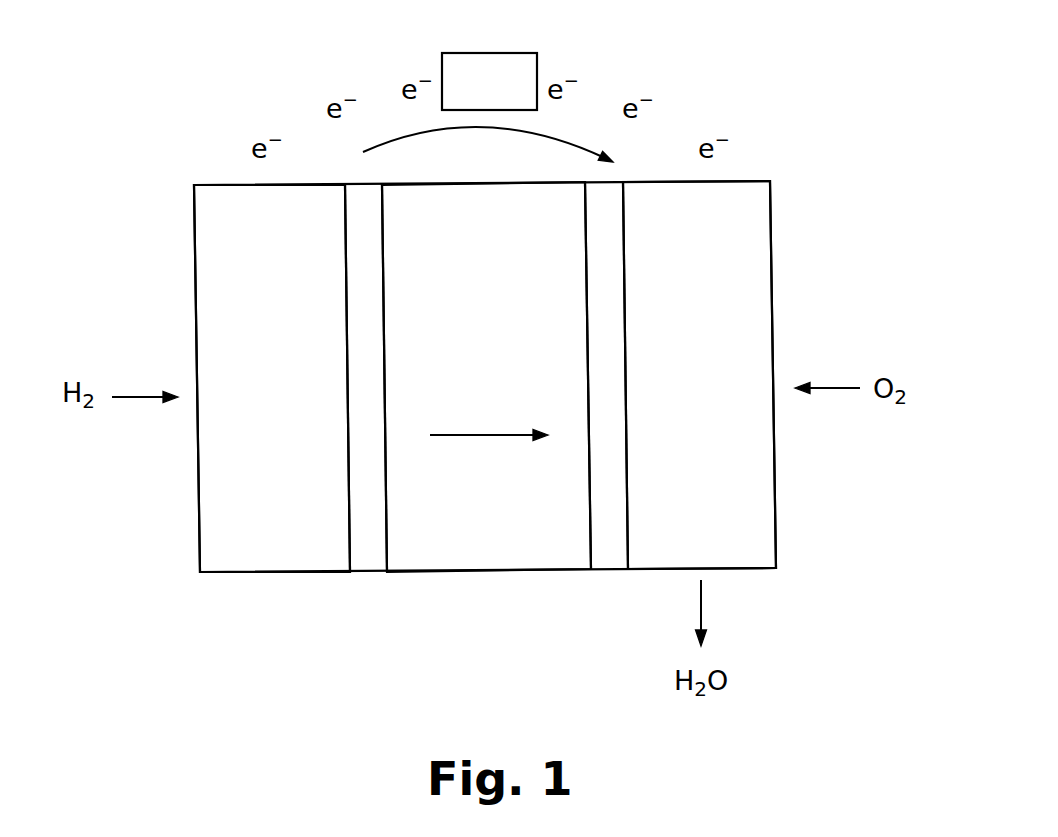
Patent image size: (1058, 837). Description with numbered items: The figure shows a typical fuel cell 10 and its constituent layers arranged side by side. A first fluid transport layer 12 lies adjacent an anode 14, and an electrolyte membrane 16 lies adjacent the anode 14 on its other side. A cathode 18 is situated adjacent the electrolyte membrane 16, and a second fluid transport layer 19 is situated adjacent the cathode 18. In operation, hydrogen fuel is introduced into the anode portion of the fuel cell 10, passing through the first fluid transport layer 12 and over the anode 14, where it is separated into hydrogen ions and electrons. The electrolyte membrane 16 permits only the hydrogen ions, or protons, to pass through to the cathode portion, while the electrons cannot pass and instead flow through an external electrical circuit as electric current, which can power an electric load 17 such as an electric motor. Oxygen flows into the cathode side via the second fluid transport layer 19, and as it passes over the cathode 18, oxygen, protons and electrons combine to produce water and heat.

The fuel cell 10 is at (803, 82).
The first fluid transport layer 12 is at (279, 557).
The anode 14 is at (364, 572).
The electrolyte membrane 16 is at (511, 557).
The electric load 17 is at (525, 52).
The cathode 18 is at (607, 570).
The second fluid transport layer 19 is at (725, 552).